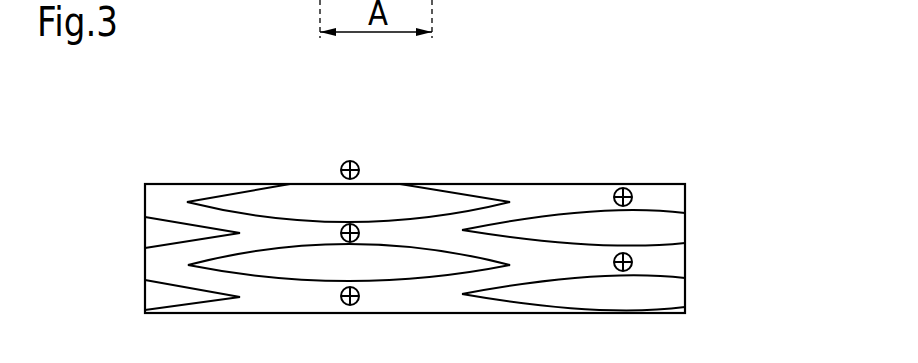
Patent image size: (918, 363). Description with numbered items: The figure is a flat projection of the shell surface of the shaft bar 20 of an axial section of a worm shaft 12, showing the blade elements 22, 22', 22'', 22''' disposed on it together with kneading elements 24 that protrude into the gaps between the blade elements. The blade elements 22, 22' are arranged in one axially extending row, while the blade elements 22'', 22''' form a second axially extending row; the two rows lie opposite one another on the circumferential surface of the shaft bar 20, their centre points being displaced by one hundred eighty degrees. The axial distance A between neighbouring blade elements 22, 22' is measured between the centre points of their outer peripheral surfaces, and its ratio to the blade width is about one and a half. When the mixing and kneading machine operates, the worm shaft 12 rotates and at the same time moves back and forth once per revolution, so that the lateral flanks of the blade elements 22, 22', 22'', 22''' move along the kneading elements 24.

The worm shaft 12 is at (112, 139).
The shaft bar 20 is at (557, 197).
The blade element 22 is at (348, 158).
The blade element 22' is at (285, 267).
The blade element 22'' is at (617, 289).
The blade element 22''' is at (604, 170).
The kneading element 24 is at (348, 161).